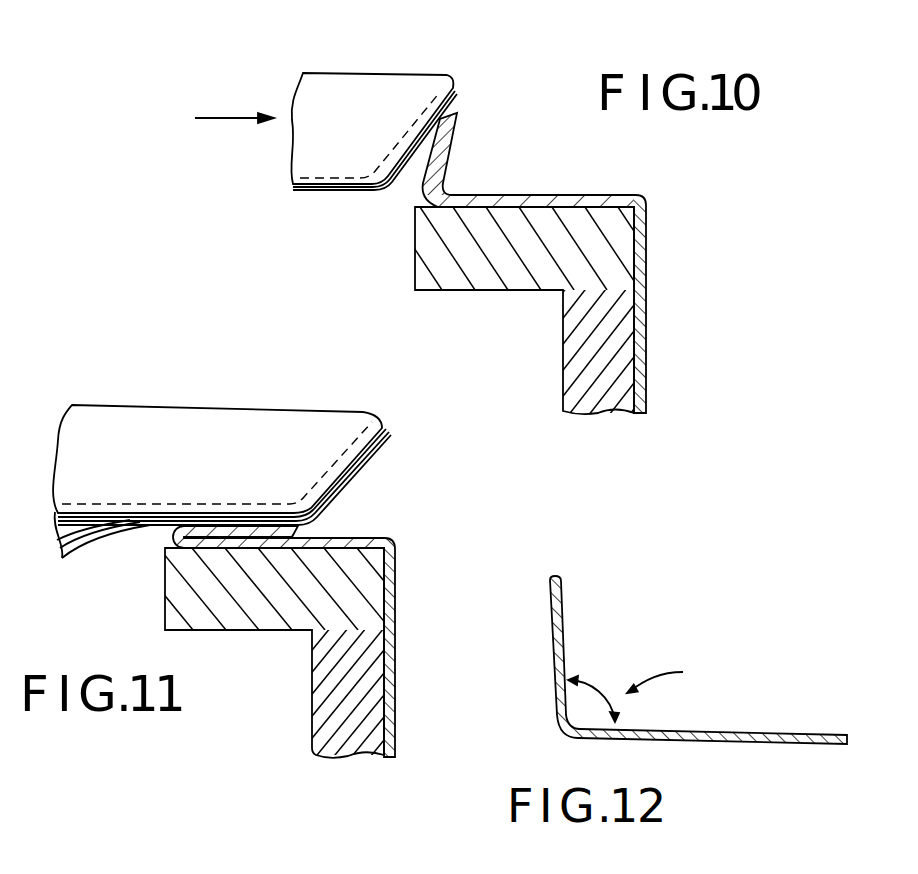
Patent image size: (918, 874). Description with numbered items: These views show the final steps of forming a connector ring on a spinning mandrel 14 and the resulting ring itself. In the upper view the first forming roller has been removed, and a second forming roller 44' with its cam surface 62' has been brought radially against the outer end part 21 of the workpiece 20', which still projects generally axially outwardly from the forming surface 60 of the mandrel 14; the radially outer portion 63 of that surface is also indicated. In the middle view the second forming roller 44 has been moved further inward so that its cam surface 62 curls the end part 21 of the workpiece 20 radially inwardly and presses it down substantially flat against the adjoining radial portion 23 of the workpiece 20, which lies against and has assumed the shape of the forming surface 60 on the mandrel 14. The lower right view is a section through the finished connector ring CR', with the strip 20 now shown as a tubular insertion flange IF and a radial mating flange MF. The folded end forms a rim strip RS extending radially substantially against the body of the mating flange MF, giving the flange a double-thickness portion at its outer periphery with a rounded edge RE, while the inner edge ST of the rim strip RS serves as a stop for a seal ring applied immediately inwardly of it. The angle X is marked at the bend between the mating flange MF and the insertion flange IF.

In FIG. 10, the second forming roller 44' is at (372, 103).
In FIG. 11, the second forming roller 44 is at (217, 434).
In FIG. 10, the outer end part of the workpiece 21 is at (458, 117).
In FIG. 11, the outer end part of the workpiece 21 is at (255, 533).
In FIG. 10, the radially outer portion of forming surface 63 is at (310, 192).
In FIG. 10, the cam surface 62' is at (374, 170).
In FIG. 11, the cam surface 62 is at (240, 475).
In FIG. 10, the forming surface 60 is at (490, 196).
In FIG. 11, the forming surface 60 is at (317, 540).
In FIG. 10, the mandrel 14 is at (563, 353).
In FIG. 11, the mandrel 14 is at (312, 728).
In FIG. 10, the workpiece 20' is at (562, 260).
In FIG. 11, the workpiece 20 is at (315, 640).
In FIG. 11, the adjoining radial portion of the workpiece 23 is at (207, 542).
In FIG. 12, the rounded edge RE is at (555, 577).
In FIG. 12, the mating flange MF is at (565, 652).
In FIG. 12, the bend angle X is at (602, 687).
In FIG. 12, the rim strip RS is at (547, 610).
In FIG. 12, the edge ST is at (552, 640).
In FIG. 12, the connector ring CR' is at (675, 674).
In FIG. 12, the insertion flange IF is at (722, 741).